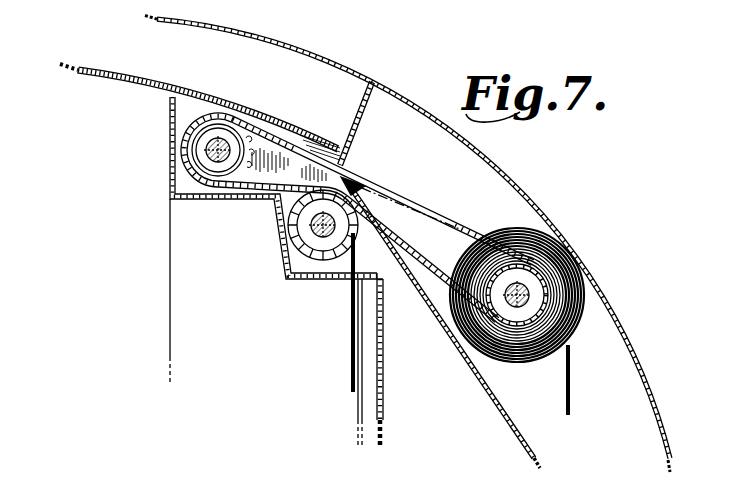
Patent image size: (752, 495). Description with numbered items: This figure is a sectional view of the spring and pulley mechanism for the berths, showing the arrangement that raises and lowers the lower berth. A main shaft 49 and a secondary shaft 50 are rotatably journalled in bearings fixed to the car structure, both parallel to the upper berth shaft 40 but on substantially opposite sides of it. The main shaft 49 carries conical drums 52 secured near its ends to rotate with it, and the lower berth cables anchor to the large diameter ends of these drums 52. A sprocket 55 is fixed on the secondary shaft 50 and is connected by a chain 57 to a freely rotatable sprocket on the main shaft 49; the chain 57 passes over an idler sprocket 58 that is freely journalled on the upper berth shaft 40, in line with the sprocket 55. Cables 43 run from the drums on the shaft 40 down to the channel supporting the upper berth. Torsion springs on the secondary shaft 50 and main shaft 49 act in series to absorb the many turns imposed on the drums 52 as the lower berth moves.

The shaft 40 is at (305, 262).
The cables 43 is at (352, 328).
The main shaft 49 is at (561, 237).
The secondary shaft 50 is at (184, 160).
The conical drums 52 is at (507, 226).
The sprocket 55 is at (250, 190).
The chain 57 is at (400, 230).
The idler sprocket 58 is at (298, 243).